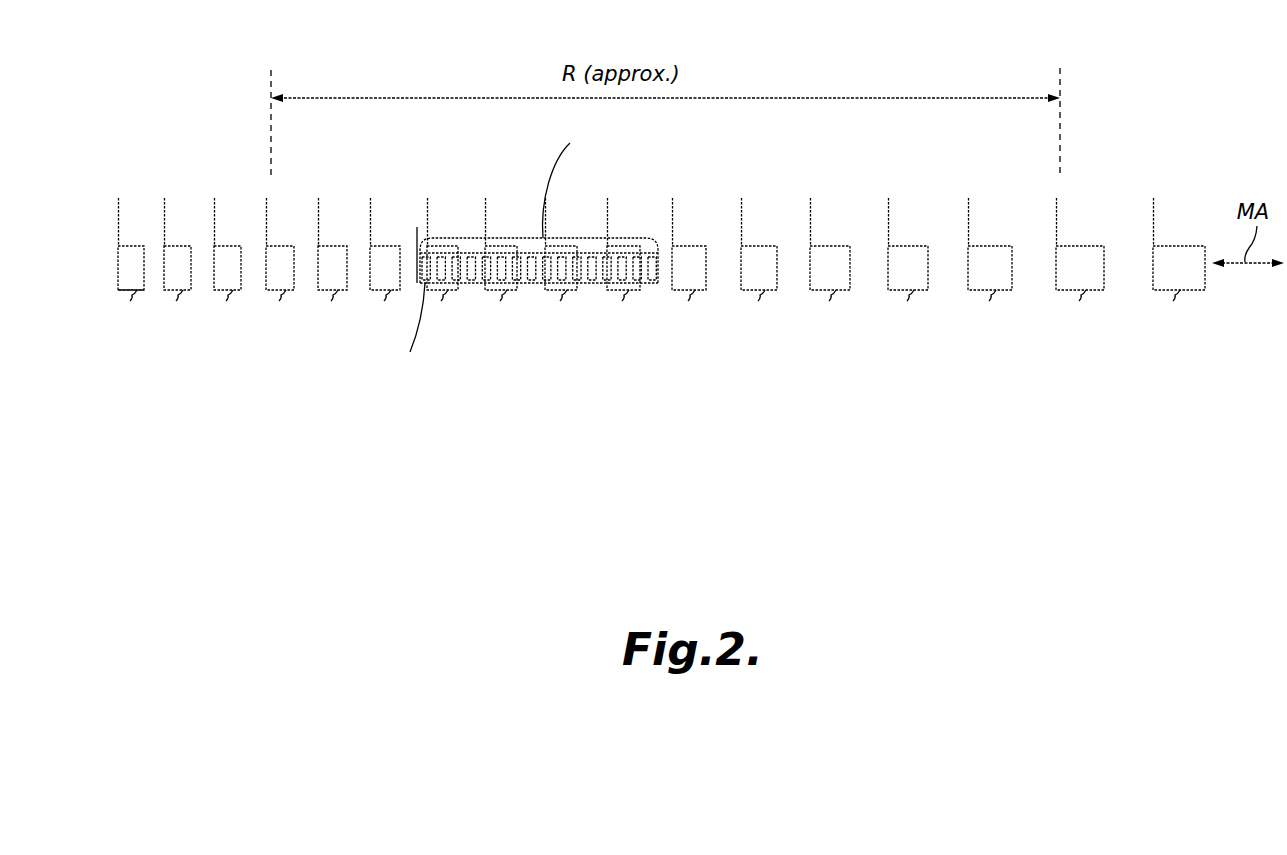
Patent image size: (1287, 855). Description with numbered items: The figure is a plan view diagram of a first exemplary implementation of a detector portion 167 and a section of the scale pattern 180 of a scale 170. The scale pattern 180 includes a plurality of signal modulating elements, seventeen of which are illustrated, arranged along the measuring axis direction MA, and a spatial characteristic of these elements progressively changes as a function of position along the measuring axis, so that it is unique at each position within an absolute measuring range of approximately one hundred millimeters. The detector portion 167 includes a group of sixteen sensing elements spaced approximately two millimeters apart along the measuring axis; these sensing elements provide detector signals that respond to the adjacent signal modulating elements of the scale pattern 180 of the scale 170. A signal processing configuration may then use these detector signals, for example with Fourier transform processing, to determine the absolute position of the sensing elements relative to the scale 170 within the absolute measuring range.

The scale pattern 180 is at (100, 271).
The scale 170 is at (1172, 149).
The detector portion 167 is at (590, 284).